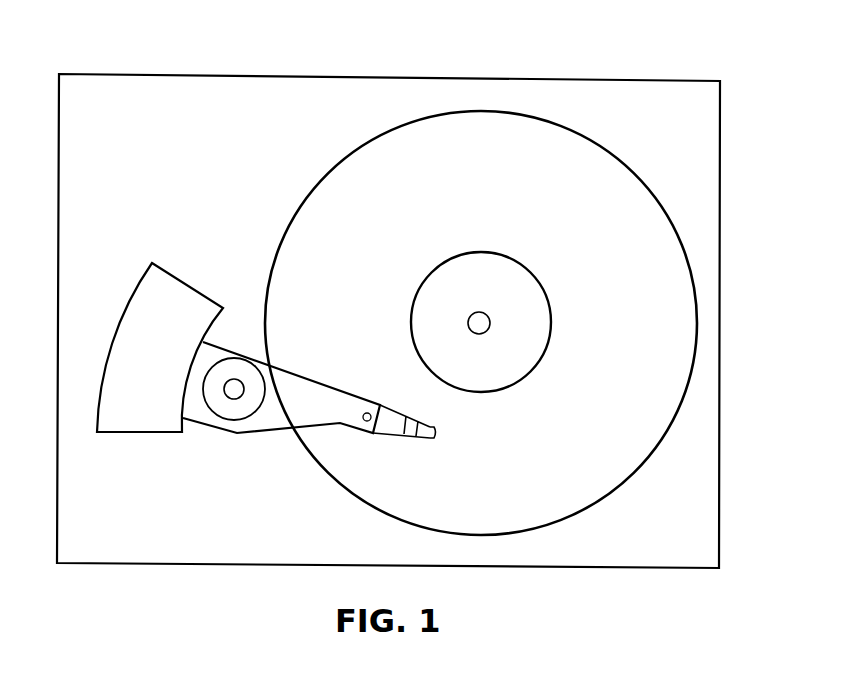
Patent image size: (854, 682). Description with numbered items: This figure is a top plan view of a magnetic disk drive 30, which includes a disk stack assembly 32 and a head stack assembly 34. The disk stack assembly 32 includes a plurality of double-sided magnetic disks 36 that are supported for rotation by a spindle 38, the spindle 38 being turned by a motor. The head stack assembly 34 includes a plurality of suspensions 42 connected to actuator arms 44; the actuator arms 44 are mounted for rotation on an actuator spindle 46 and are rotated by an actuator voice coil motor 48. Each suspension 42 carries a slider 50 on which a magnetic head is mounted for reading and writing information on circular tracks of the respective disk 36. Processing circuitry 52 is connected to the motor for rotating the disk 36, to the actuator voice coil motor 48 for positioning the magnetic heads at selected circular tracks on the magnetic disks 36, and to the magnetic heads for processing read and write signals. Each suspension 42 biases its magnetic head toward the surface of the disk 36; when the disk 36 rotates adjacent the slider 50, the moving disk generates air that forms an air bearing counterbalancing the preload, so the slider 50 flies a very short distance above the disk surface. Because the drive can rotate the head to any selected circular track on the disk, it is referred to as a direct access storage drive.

The magnetic disk drive 30 is at (652, 60).
The disk stack assembly 32 is at (628, 157).
The head stack assembly 34 is at (296, 362).
The magnetic disk 36 is at (651, 353).
The spindle 38 is at (486, 313).
The suspension 42 is at (385, 442).
The actuator arm 44 is at (328, 392).
The actuator spindle 46 is at (258, 420).
The actuator voice coil motor 48 is at (192, 290).
The slider 50 is at (435, 434).
The processing circuitry 52 is at (398, 408).